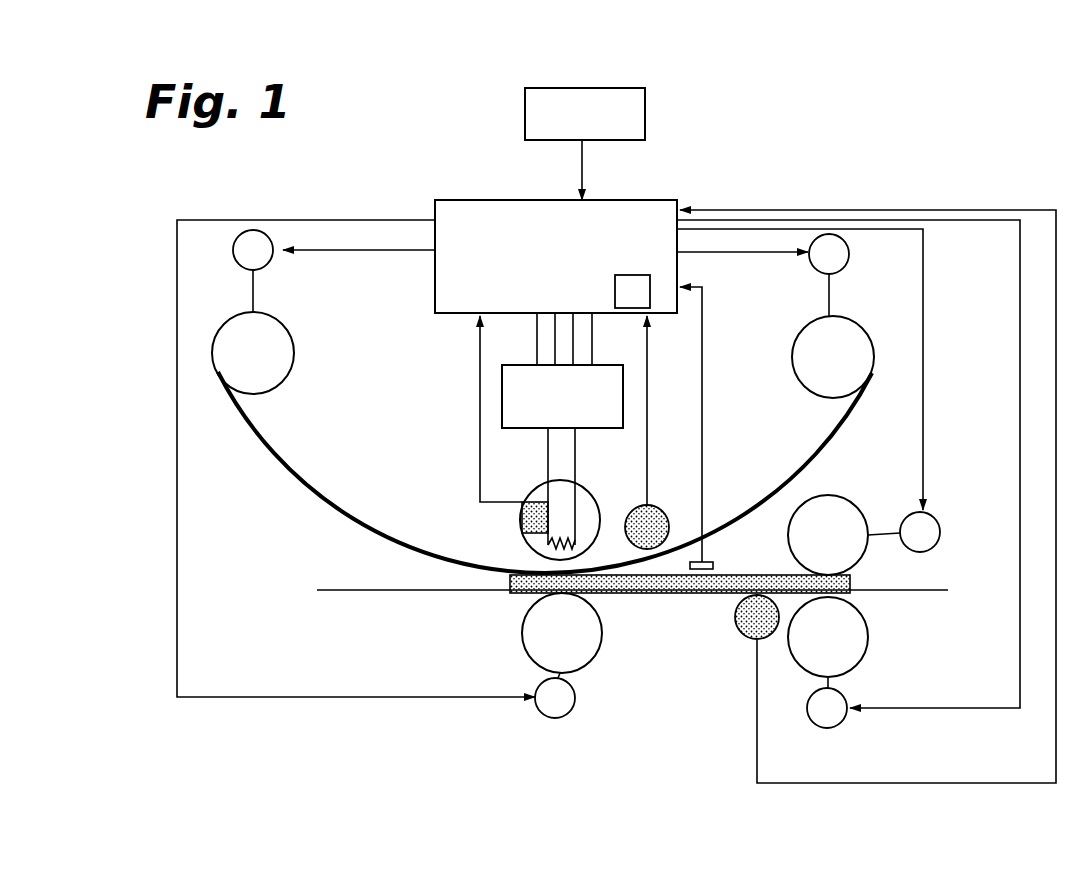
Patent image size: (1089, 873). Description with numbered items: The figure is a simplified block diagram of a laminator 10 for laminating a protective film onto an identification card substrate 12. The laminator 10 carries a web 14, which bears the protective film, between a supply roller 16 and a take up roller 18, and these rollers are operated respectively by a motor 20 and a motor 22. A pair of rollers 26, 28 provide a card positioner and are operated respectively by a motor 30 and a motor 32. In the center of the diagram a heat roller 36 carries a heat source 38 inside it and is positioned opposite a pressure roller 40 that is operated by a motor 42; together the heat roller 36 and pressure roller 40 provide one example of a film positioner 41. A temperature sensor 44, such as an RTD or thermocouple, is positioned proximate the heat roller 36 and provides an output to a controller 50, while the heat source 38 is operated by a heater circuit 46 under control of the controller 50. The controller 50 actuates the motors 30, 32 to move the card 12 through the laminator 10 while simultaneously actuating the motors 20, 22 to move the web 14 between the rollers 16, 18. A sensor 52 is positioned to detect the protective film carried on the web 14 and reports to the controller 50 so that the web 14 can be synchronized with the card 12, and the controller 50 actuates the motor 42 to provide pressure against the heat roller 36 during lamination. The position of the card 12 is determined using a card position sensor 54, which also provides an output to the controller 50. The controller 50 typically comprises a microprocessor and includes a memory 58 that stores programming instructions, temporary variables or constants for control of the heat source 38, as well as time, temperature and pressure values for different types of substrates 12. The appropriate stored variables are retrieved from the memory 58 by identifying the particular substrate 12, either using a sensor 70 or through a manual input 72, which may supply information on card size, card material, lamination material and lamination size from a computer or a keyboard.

The laminator 10 is at (828, 74).
The identification card substrate 12 is at (850, 580).
The web 14 is at (292, 470).
The supply roller 16 is at (802, 350).
The take up roller 18 is at (294, 340).
The motor 20 is at (835, 235).
The motor 22 is at (265, 234).
The roller 26 is at (858, 622).
The roller 28 is at (838, 500).
The motor 30 is at (845, 695).
The motor 32 is at (938, 520).
The heat roller 36 is at (588, 503).
The heat source 38 is at (548, 545).
The pressure roller 40 is at (525, 643).
The film positioner 41 is at (488, 610).
The motor 42 is at (576, 696).
The temperature sensor 44 is at (522, 520).
The heater circuit 46 is at (502, 386).
The controller 50 is at (556, 256).
The sensor 52 is at (652, 505).
The card position sensor 54 is at (742, 635).
The memory 58 is at (650, 281).
The sensor 70 is at (713, 565).
The manual input 72 is at (645, 102).